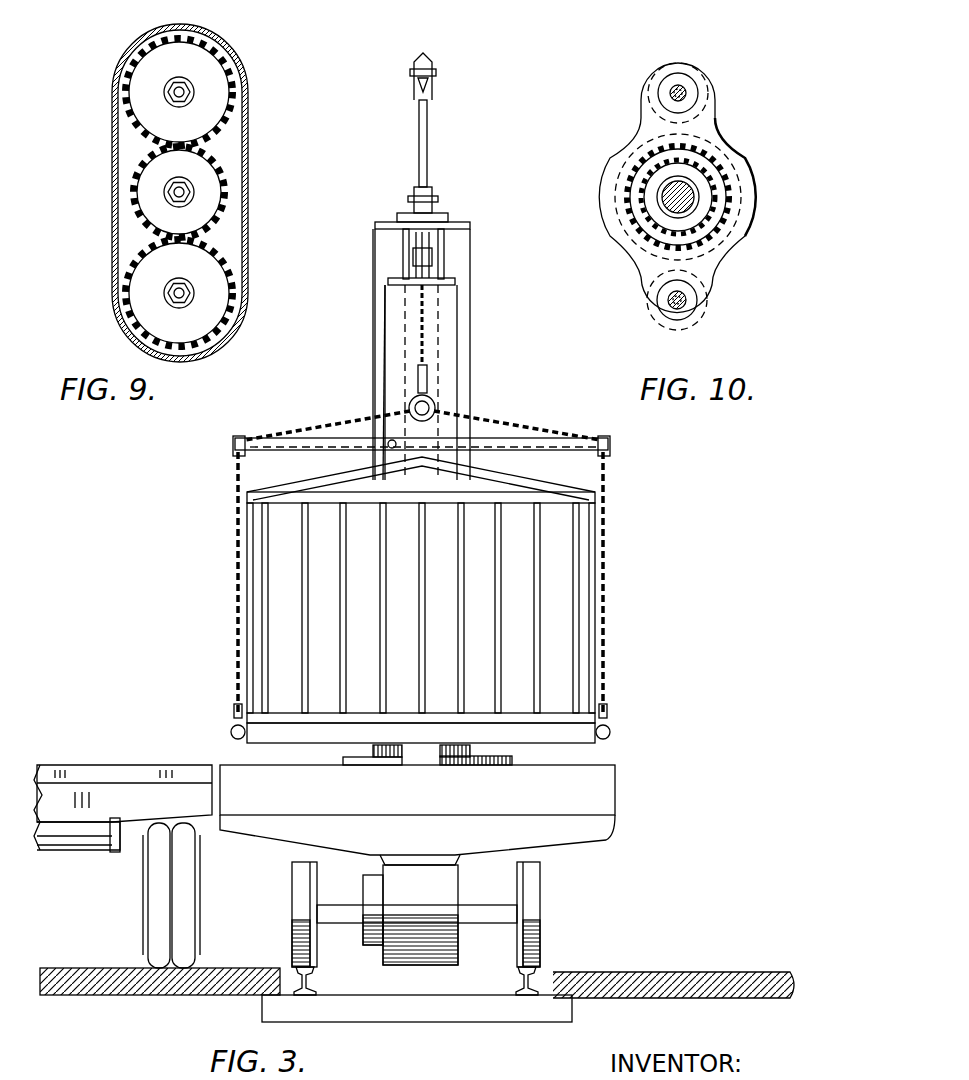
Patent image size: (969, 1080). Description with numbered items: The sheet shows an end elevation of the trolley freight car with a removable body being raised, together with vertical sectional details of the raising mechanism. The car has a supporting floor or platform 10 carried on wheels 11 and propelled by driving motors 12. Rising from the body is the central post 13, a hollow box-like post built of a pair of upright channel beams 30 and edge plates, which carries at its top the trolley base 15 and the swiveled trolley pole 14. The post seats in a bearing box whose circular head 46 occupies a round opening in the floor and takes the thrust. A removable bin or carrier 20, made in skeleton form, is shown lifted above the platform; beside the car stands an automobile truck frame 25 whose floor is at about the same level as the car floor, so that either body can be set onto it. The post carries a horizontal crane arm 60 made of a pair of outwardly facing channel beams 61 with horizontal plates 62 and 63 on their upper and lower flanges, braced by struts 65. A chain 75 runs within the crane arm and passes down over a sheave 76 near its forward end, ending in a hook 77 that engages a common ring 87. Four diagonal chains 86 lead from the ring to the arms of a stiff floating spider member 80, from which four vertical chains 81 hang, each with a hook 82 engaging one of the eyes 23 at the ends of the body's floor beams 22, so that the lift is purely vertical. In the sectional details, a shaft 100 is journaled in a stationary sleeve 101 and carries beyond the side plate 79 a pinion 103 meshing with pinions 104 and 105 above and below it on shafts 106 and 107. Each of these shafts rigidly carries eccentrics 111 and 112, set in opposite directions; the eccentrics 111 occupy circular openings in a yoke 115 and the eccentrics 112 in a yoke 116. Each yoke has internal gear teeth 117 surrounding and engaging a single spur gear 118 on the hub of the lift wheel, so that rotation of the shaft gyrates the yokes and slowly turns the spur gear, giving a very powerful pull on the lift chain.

In FIG. 3, the supporting floor or platform 10 is at (605, 765).
In FIG. 3, the wheels 11 is at (540, 892).
In FIG. 3, the driving motors 12 is at (445, 878).
In FIG. 3, the central post 13 is at (470, 316).
In FIG. 3, the trolley pole 14 is at (424, 125).
In FIG. 3, the trolley base 15 is at (438, 208).
In FIG. 3, the removable bins or carriers 20 is at (258, 627).
In FIG. 3, the floor beams 22 is at (580, 746).
In FIG. 3, the eyes 23 is at (230, 732).
In FIG. 3, the automobile truck frame 25 is at (138, 748).
In FIG. 3, the upright channel beams 30 is at (373, 340).
In FIG. 3, the circular head 46 is at (500, 765).
In FIG. 3, the crane arm 60 is at (380, 224).
In FIG. 3, the outwardly facing channel beams 61 is at (403, 243).
In FIG. 3, the upper horizontal plate 62 is at (462, 224).
In FIG. 3, the lower horizontal plate 63 is at (450, 288).
In FIG. 3, the struts 65 is at (450, 378).
In FIG. 3, the chain 75 is at (424, 345).
In FIG. 3, the sheave 76 is at (415, 262).
In FIG. 3, the hook 77 is at (385, 390).
In FIG. 9, the side plate 79 is at (250, 240).
In FIG. 3, the floating spider member 80 is at (515, 452).
In FIG. 3, the vertical chains 81 is at (236, 555).
In FIG. 3, the hook 82 is at (234, 712).
In FIG. 3, the diagonal chains 86 is at (520, 430).
In FIG. 3, the common ring 87 is at (434, 404).
In FIG. 9, the shaft 100 is at (177, 200).
In FIG. 10, the shaft 100 is at (678, 197).
In FIG. 10, the stationary sleeve 101 is at (678, 218).
In FIG. 9, the pinion 103 is at (210, 175).
In FIG. 9, the upper pinion 104 is at (222, 122).
In FIG. 9, the lower pinion 105 is at (222, 305).
In FIG. 9, the upper shaft 106 is at (194, 88).
In FIG. 10, the upper shaft 106 is at (668, 97).
In FIG. 9, the lower shaft 107 is at (189, 285).
In FIG. 10, the lower shaft 107 is at (668, 302).
In FIG. 10, the eccentrics 111 is at (698, 106).
In FIG. 10, the eccentrics 112 is at (690, 80).
In FIG. 10, the yoke 115 is at (740, 240).
In FIG. 10, the yoke 116 is at (722, 248).
In FIG. 10, the internal gear teeth 117 is at (718, 158).
In FIG. 10, the spur gear 118 is at (730, 172).